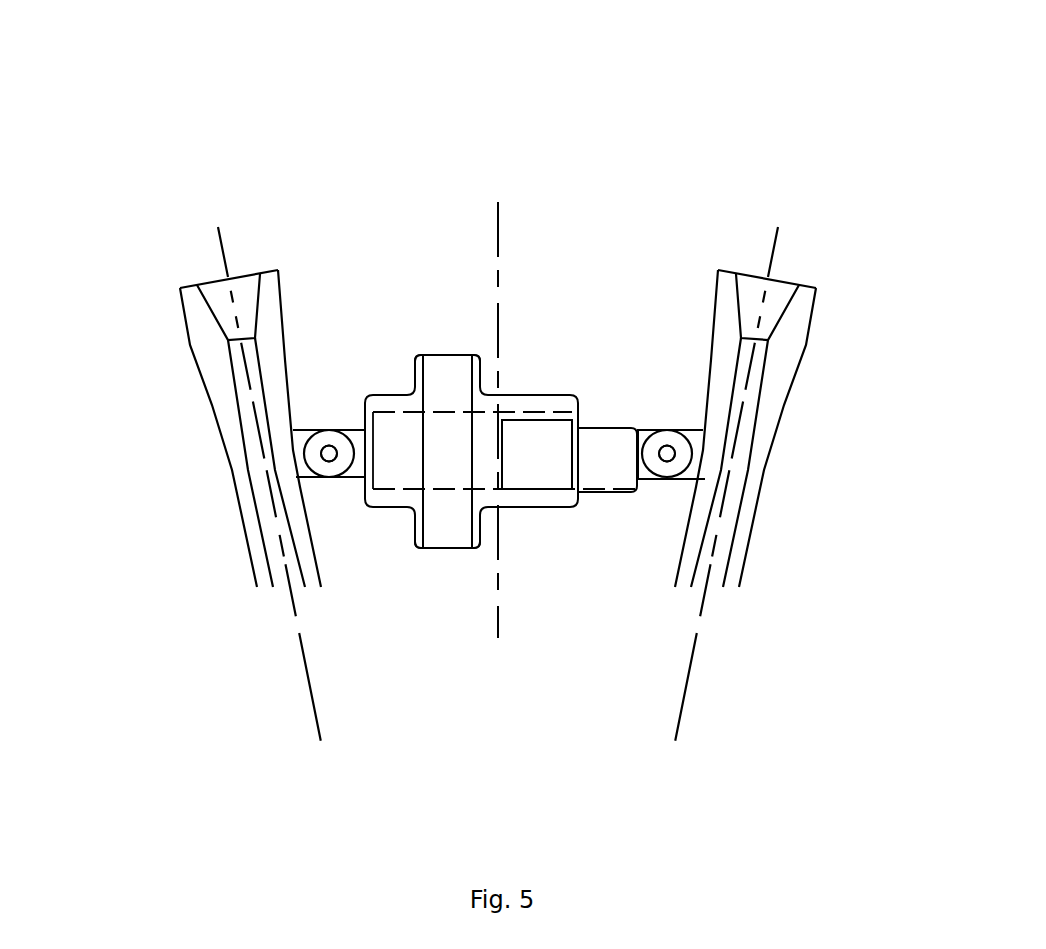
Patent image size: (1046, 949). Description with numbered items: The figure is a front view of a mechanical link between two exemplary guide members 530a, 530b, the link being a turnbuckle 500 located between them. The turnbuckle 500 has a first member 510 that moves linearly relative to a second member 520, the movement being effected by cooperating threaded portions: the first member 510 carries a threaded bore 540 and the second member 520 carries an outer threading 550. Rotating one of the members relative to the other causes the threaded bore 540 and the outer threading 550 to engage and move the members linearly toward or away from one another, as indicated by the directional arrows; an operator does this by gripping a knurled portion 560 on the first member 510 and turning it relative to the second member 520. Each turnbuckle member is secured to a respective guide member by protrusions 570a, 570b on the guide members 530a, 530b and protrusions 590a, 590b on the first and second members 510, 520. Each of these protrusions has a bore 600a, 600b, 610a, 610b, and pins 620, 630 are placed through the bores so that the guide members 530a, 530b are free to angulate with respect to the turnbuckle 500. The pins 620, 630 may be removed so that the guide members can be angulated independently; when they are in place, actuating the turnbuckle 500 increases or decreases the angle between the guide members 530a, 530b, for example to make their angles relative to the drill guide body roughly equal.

The turnbuckle 500 is at (537, 379).
The first member 510 is at (394, 391).
The second member 520 is at (601, 430).
The guide member 530a is at (177, 280).
The guide member 530b is at (822, 283).
The threaded bore 540 is at (449, 403).
The outer threading 550 is at (528, 487).
The knurled portion 560 is at (449, 353).
The protrusion 570a is at (313, 489).
The protrusion 570b is at (681, 489).
The protrusion 590a is at (350, 423).
The protrusion 590b is at (648, 427).
The bore 600a is at (329, 453).
The bore 600b is at (667, 453).
The bore 610a is at (388, 575).
The bore 610b is at (618, 579).
The pin 620 is at (667, 452).
The pin 630 is at (329, 452).